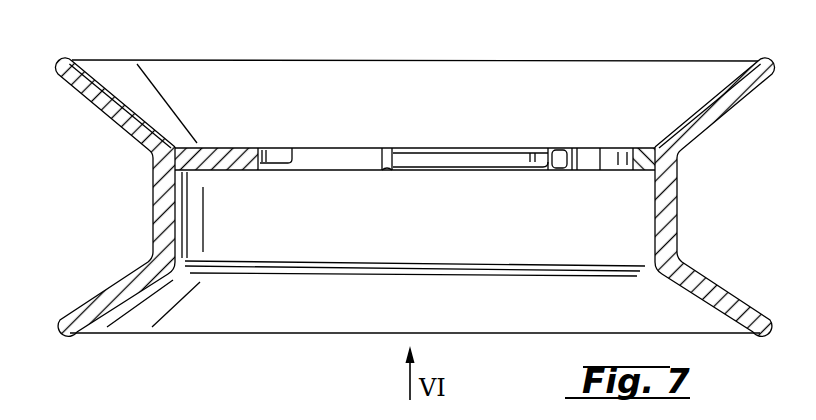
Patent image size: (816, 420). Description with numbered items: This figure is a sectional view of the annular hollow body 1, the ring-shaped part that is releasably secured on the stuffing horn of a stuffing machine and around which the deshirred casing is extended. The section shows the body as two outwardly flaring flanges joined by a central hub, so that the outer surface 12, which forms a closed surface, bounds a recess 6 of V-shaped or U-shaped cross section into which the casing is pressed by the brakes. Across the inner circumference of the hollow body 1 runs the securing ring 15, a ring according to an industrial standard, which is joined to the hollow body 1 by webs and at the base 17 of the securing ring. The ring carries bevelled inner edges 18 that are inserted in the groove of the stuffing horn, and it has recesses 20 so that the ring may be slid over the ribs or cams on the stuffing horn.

The annular hollow body 1 is at (717, 84).
The recess 6 is at (135, 205).
The outer surface 12 is at (108, 281).
The securing ring 15 is at (234, 144).
The base of the securing ring 17 is at (203, 148).
The bevelled inner edges 18 is at (275, 168).
The recesses 20 is at (333, 158).